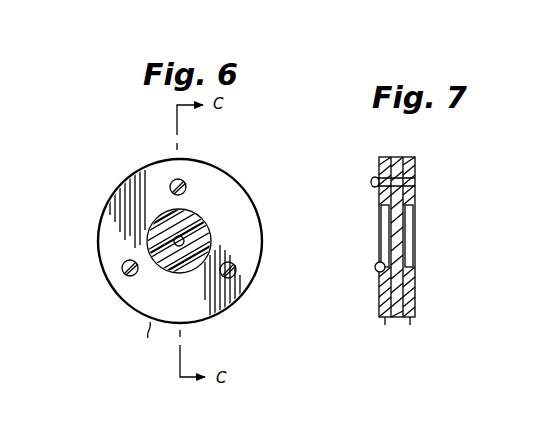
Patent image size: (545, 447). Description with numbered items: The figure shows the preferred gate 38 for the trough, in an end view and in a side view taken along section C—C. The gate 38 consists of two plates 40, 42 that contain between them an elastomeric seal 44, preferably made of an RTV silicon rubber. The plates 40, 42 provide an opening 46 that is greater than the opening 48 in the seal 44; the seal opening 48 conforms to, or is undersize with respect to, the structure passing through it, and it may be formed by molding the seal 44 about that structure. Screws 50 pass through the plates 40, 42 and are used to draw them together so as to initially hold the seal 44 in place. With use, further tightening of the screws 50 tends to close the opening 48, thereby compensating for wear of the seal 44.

In FIG. 6, the gate 38 is at (242, 303).
In FIG. 7, the gate 38 is at (420, 286).
In FIG. 6, the plate 40 is at (145, 340).
In FIG. 7, the plate 40 is at (386, 320).
In FIG. 7, the plate 42 is at (416, 322).
In FIG. 7, the elastomeric seal 44 is at (397, 262).
In FIG. 6, the opening 46 is at (200, 224).
In FIG. 7, the opening 46 is at (400, 228).
In FIG. 6, the opening 48 is at (174, 242).
In FIG. 6, the screws 50 is at (186, 186).